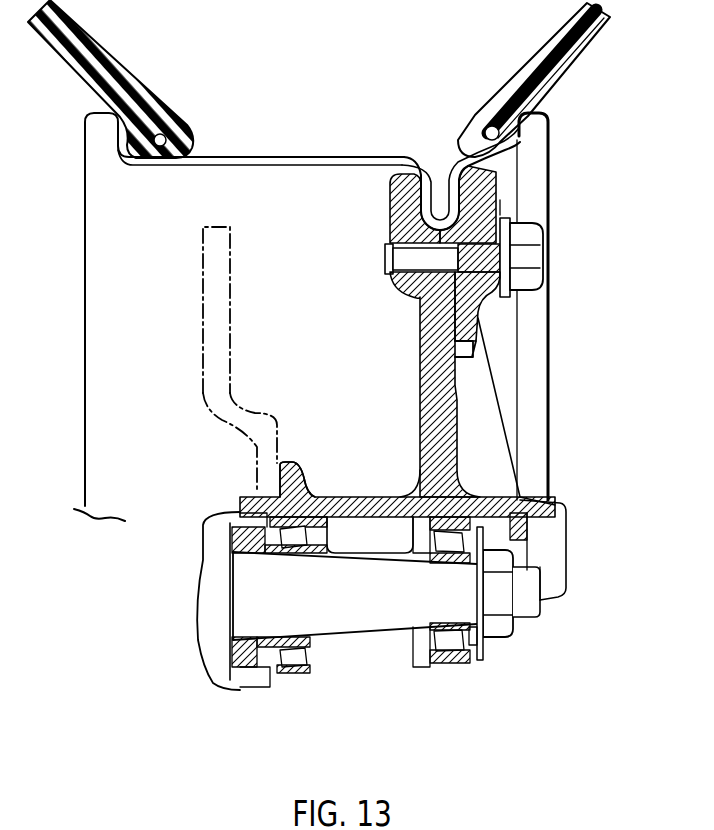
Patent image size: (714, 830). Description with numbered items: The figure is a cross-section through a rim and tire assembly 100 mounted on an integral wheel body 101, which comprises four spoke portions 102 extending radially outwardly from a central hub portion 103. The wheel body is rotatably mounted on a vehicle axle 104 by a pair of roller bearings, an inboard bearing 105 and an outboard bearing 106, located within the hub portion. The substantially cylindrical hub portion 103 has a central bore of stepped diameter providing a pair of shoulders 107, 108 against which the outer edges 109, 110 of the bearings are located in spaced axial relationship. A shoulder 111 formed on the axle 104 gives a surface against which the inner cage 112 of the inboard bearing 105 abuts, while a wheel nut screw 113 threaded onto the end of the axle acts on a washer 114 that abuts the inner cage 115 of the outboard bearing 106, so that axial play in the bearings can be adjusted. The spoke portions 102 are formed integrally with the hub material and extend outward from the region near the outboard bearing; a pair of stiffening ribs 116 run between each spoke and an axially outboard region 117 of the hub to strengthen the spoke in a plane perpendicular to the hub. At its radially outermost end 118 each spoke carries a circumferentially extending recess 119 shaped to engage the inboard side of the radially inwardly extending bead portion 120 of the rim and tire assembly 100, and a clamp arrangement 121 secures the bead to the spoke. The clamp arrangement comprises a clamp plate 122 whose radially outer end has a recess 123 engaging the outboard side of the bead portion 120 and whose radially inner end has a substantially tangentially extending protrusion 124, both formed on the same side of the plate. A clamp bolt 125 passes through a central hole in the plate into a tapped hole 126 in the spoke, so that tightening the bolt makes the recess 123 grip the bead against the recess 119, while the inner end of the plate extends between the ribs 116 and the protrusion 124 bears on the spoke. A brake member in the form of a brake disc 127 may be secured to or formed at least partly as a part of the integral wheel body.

The rim and tire assembly 100 is at (178, 180).
The wheel body 101 is at (526, 500).
The spoke portion 102 is at (418, 414).
The hub portion 103 is at (365, 497).
The vehicle axle 104 is at (350, 612).
The inboard bearing 105 is at (305, 678).
The outboard bearing 106 is at (428, 674).
The shoulder 107 is at (320, 496).
The shoulder 108 is at (415, 531).
The outer edge of inboard bearing 109 is at (238, 518).
The outer edge of outboard bearing 110 is at (530, 488).
The shoulder 111 is at (232, 538).
The inner cage 112 is at (262, 687).
The wheel nut screw 113 is at (503, 630).
The washer 114 is at (483, 660).
The inner cage 115 is at (471, 648).
The stiffening rib 116 is at (488, 402).
The axially outboard region 117 is at (530, 538).
The radially outermost end 118 is at (389, 201).
The recess 119 is at (392, 243).
The bead portion 120 is at (418, 160).
The clamp arrangement 121 is at (512, 207).
The clamp plate 122 is at (480, 318).
The recess 123 is at (512, 206).
The protrusion 124 is at (473, 343).
The clamp bolt 125 is at (552, 280).
The tapped hole 126 is at (390, 280).
The brake disc 127 is at (213, 362).